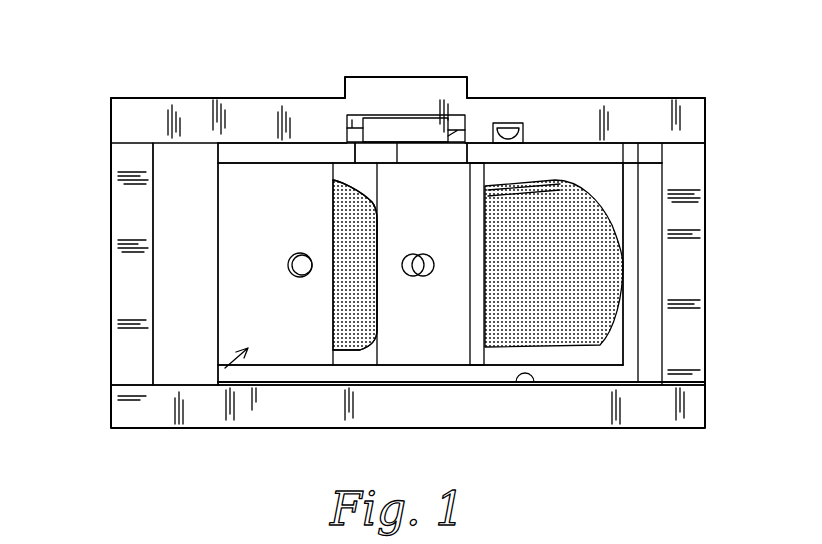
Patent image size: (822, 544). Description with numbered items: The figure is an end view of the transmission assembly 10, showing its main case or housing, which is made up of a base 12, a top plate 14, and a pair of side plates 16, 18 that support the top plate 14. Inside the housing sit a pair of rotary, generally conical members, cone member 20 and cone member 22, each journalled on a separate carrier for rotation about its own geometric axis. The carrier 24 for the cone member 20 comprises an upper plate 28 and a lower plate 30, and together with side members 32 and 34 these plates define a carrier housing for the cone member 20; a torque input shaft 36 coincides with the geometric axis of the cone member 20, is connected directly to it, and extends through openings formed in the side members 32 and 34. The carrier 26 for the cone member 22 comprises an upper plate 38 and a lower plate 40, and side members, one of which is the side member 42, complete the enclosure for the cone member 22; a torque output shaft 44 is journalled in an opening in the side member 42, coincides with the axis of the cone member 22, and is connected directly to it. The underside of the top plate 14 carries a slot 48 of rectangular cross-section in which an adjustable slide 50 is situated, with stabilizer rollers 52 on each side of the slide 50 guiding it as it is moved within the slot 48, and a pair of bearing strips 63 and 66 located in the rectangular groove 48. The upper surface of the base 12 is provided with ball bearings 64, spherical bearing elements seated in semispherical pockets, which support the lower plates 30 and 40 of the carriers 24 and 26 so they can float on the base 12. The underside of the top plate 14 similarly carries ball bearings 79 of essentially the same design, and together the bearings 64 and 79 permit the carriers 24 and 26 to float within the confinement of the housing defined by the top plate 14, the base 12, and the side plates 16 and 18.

The transmission assembly 10 is at (607, 97).
The base 12 is at (625, 398).
The top plate 14 is at (265, 110).
The side plate 16 is at (705, 277).
The side plate 18 is at (111, 293).
The cone member 20 is at (600, 238).
The cone member 22 is at (338, 350).
The carrier 24 is at (608, 150).
The carrier 26 is at (217, 387).
The upper plate 28 is at (537, 153).
The lower plate 30 is at (583, 378).
The side member 32 is at (478, 157).
The side member 34 is at (605, 187).
The torque input shaft 36 is at (427, 274).
The upper plate 38 is at (233, 153).
The lower plate 40 is at (273, 382).
The side member 42 is at (240, 237).
The torque output shaft 44 is at (288, 265).
The slot 48 is at (345, 122).
The adjustable slide 50 is at (407, 127).
The stabilizer rollers 52 is at (330, 220).
The bearing strip 63 is at (363, 118).
The ball bearings 64 is at (537, 383).
The bearing strip 66 is at (440, 118).
The ball bearings 79 is at (520, 137).